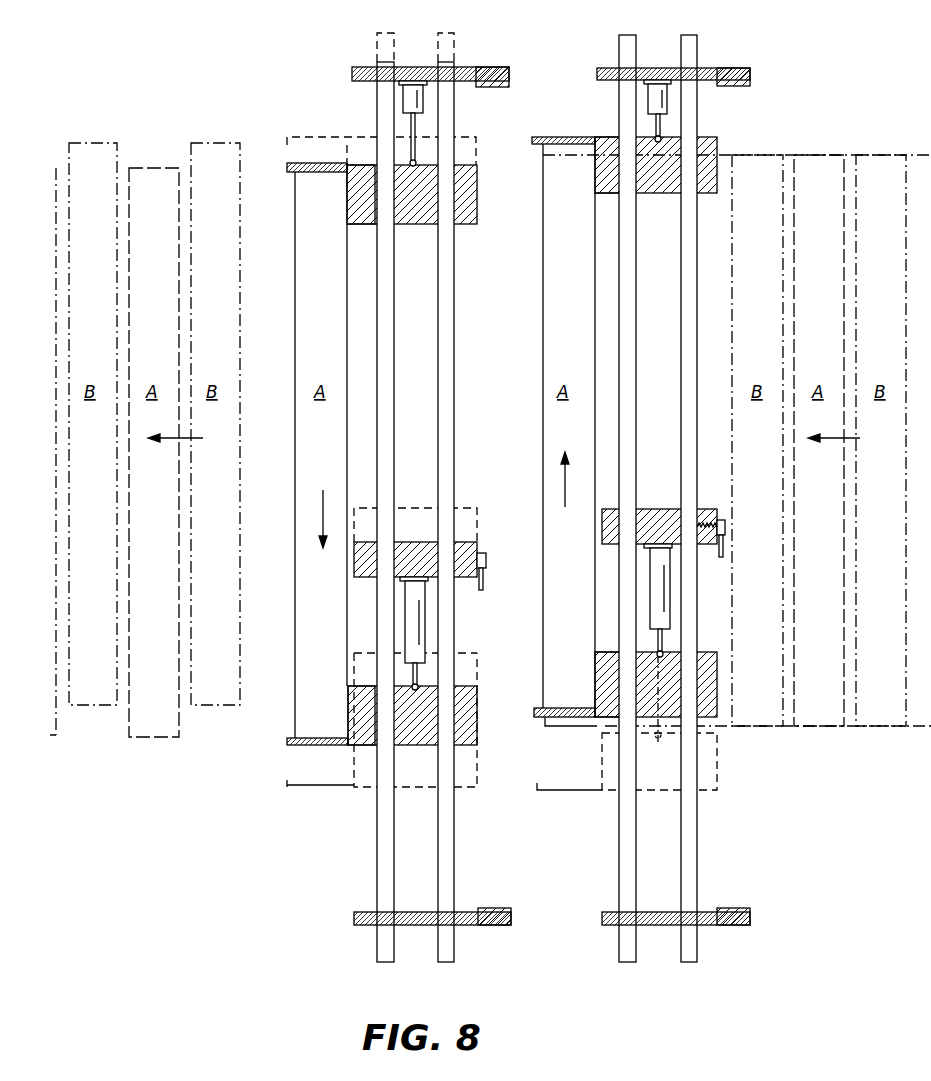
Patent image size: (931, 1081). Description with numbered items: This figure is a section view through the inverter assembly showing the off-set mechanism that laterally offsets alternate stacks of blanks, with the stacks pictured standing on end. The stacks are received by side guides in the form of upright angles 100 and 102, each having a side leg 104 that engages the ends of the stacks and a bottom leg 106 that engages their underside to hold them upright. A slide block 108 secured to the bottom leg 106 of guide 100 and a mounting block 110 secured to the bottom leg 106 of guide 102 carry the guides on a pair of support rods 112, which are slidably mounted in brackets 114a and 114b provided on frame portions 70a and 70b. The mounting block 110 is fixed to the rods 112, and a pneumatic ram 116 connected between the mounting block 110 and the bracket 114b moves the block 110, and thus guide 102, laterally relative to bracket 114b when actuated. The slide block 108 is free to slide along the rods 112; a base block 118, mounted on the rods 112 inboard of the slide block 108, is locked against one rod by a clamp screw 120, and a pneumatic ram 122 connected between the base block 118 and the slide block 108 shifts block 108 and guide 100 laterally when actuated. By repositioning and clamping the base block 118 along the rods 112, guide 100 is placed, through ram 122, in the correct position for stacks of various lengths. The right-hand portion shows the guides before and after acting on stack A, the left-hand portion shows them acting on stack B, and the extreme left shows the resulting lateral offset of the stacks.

The frame portion 70a is at (496, 908).
The frame portion 70b is at (486, 90).
The upright angle guide 100 is at (288, 743).
The upright angle guide 102 is at (306, 131).
The side leg 104 is at (320, 163).
The bottom leg 106 is at (350, 718).
The slide block 108 is at (478, 732).
The mounting block 110 is at (469, 226).
The support rods 112 is at (380, 889).
The bracket 114a is at (470, 926).
The bracket 114b is at (455, 67).
The pneumatic ram 116 is at (404, 99).
The base block 118 is at (472, 542).
The clamp screw 120 is at (487, 563).
The pneumatic ram 122 is at (421, 614).